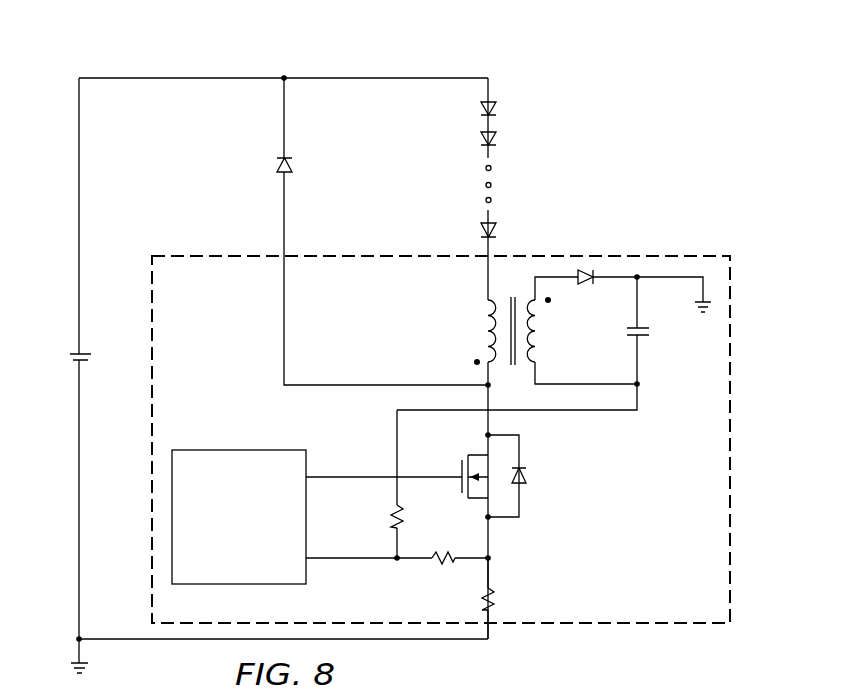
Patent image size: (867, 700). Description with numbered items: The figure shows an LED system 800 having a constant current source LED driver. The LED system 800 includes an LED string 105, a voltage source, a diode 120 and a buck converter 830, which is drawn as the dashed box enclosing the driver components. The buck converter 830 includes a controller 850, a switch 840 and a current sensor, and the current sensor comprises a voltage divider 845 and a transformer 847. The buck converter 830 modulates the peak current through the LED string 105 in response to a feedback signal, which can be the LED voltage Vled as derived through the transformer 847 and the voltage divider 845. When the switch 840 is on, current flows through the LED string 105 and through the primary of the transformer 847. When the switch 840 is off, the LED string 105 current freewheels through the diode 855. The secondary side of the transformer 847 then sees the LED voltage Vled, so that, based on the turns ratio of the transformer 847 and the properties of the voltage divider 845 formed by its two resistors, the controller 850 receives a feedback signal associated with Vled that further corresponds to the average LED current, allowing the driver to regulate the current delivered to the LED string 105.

The LED system 800 is at (176, 68).
The LED string 105 is at (509, 141).
The diode 120 is at (277, 160).
The buck converter 830 is at (734, 489).
The switch 840 is at (530, 478).
The voltage divider 845 is at (385, 567).
The transformer 847 is at (498, 322).
The controller 850 is at (258, 552).
The diode 855 is at (588, 283).